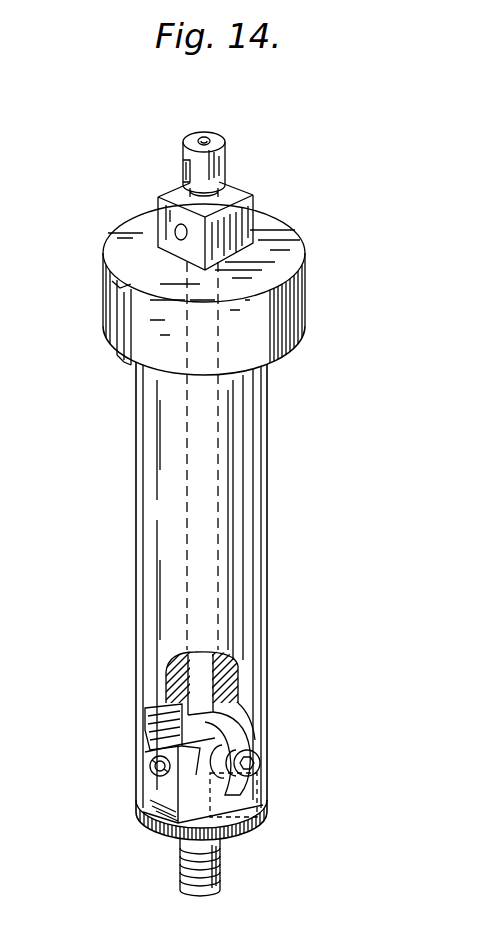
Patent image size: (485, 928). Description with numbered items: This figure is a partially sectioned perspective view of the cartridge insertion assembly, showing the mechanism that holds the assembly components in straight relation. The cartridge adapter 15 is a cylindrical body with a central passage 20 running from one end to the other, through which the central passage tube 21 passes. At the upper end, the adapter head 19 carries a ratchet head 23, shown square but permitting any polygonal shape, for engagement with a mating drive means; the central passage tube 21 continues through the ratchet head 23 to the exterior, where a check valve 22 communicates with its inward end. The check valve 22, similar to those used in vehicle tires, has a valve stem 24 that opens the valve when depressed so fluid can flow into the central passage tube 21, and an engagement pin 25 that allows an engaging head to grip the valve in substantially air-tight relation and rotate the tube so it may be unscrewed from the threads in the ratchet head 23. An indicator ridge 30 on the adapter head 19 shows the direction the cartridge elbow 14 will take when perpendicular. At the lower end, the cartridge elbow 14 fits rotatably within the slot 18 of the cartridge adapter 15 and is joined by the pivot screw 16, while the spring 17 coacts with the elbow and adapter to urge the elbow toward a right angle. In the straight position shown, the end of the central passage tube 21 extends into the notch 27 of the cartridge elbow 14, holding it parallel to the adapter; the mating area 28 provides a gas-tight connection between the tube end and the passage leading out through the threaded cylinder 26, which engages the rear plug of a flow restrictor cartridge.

The cartridge elbow 14 is at (160, 828).
The cartridge adapter 15 is at (262, 502).
The pivot screw 16 is at (262, 762).
The spring 17 is at (160, 792).
The slot 18 is at (150, 713).
The adapter head 19 is at (298, 345).
The central passage 20 is at (188, 505).
The central passage tube 21 is at (208, 607).
The check valve 22 is at (226, 173).
The ratchet head 23 is at (243, 238).
The valve stem 24 is at (218, 136).
The engagement pin 25 is at (182, 170).
The threaded cylinder 26 is at (222, 893).
The notch 27 is at (236, 686).
The mating area 28 is at (150, 775).
The indicator ridge 30 is at (112, 314).